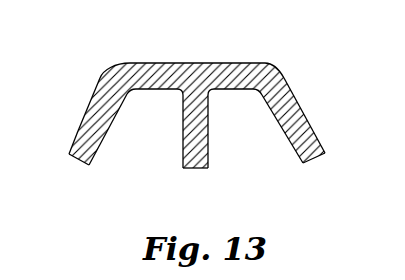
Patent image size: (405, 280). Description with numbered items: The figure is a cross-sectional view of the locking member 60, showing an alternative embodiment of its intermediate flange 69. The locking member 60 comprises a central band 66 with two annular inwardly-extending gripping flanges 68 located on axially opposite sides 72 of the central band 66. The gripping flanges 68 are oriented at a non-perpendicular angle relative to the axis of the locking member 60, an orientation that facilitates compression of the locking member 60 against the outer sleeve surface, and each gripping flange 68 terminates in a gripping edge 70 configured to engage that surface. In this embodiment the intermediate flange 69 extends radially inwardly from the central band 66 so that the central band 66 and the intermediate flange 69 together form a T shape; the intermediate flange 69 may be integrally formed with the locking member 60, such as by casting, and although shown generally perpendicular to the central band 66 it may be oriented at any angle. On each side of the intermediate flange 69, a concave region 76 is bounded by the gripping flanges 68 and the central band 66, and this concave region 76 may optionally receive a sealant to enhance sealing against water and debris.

The locking member 60 is at (268, 62).
The central band 66 is at (155, 62).
The gripping flanges 68 is at (88, 110).
The intermediate flange 69 is at (208, 128).
The gripping edge 70 is at (76, 162).
The axially opposite sides 72 is at (67, 156).
The concave region 76 is at (138, 148).